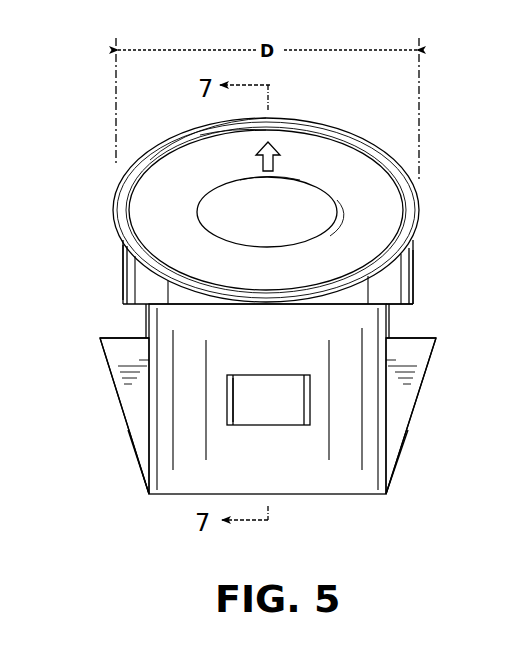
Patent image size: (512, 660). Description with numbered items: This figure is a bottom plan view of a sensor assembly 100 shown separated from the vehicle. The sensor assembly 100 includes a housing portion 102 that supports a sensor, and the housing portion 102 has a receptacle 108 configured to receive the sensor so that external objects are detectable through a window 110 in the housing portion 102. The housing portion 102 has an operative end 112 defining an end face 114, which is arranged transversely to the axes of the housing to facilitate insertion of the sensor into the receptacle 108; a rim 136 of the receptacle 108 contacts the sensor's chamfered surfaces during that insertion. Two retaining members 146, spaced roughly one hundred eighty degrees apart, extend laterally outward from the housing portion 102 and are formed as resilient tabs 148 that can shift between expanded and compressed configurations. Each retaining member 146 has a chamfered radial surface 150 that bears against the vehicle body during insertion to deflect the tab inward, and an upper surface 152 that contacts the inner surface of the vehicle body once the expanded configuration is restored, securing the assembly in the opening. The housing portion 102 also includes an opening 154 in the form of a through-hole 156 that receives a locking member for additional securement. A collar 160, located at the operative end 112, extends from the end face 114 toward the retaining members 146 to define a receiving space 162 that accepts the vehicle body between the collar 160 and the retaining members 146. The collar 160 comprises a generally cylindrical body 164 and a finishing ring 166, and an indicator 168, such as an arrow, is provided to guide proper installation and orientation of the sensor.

The sensor assembly 100 is at (96, 100).
The housing portion 102 is at (103, 302).
The receptacle 108 is at (324, 181).
The window 110 is at (308, 208).
The operative end 112 is at (94, 193).
The end face 114 is at (368, 222).
The rim 136 is at (294, 180).
The retaining member 146 is at (80, 353).
The tab 148 is at (127, 406).
The chamfered radial surface 150 is at (128, 434).
The upper surface 152 is at (100, 337).
The opening 154 is at (280, 433).
The through-hole 156 is at (243, 402).
The collar 160 is at (422, 287).
The receiving space 162 is at (398, 322).
The body 164 is at (124, 268).
The finishing ring 166 is at (152, 163).
The indicator 168 is at (252, 160).